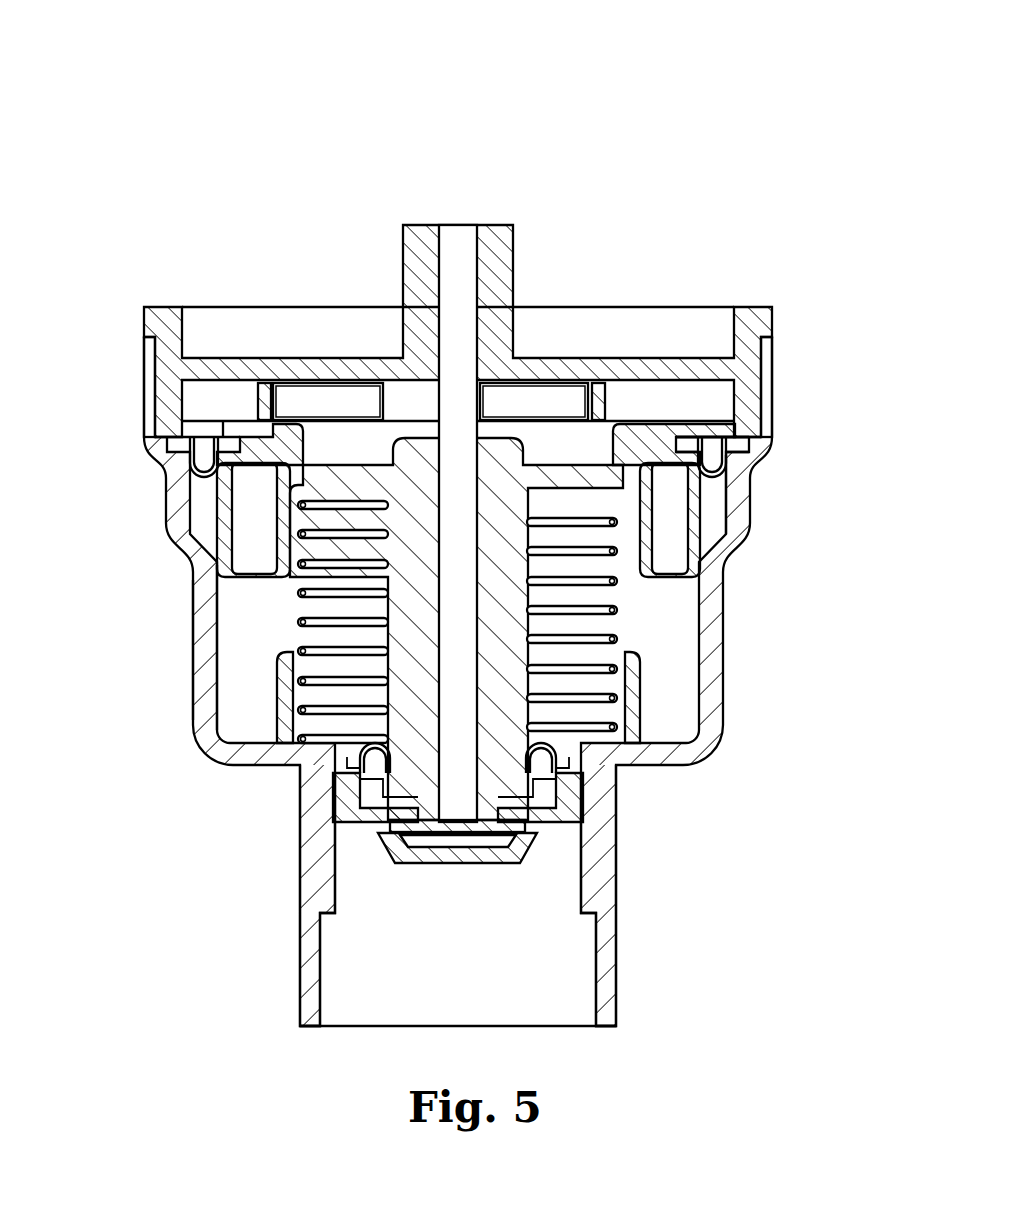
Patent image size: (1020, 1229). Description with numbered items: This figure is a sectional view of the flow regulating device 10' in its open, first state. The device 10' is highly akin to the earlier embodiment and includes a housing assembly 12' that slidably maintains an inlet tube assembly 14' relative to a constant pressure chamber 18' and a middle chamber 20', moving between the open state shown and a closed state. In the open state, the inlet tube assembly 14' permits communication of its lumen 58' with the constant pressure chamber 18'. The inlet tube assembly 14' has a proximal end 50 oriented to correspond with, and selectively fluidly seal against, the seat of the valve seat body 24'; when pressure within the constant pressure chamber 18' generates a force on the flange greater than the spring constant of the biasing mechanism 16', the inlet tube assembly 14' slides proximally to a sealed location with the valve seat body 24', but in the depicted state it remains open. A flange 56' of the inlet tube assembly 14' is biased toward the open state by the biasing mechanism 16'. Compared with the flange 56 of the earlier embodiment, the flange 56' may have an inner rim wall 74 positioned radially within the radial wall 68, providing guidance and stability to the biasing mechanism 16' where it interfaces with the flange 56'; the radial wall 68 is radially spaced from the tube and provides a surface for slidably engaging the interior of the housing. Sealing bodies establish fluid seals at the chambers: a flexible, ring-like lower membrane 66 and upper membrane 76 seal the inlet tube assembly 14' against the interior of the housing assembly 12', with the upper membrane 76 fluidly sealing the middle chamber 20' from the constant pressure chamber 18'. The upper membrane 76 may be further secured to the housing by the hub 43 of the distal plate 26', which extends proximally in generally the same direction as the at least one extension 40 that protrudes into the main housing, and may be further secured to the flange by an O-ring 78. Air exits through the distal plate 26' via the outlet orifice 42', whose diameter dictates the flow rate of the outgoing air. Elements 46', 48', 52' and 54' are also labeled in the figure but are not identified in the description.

The flow regulating device 10' is at (459, 521).
The housing assembly 12' is at (483, 681).
The inlet tube assembly 14' is at (211, 647).
The biasing mechanism 16' is at (674, 624).
The constant pressure chamber 18' is at (430, 317).
The middle chamber 20' is at (177, 650).
The valve seat body 24' is at (396, 812).
The distal plate 26' is at (458, 326).
The extension 40 is at (268, 388).
The outlet orifice 42' is at (482, 480).
The hub 43 is at (160, 402).
The outlet neck 46' is at (508, 895).
The valve disc 48' is at (548, 873).
The proximal end 50 is at (490, 822).
The spring cup 52' is at (723, 697).
The valve member 54' is at (416, 629).
The flange 56 is at (532, 401).
The flange 56' is at (196, 520).
The lumen 58' is at (290, 622).
The lower membrane 66 is at (560, 753).
The radial wall 68 is at (700, 505).
The inner rim wall 74 is at (640, 537).
The upper membrane 76 is at (198, 465).
The O-ring 78 is at (673, 427).